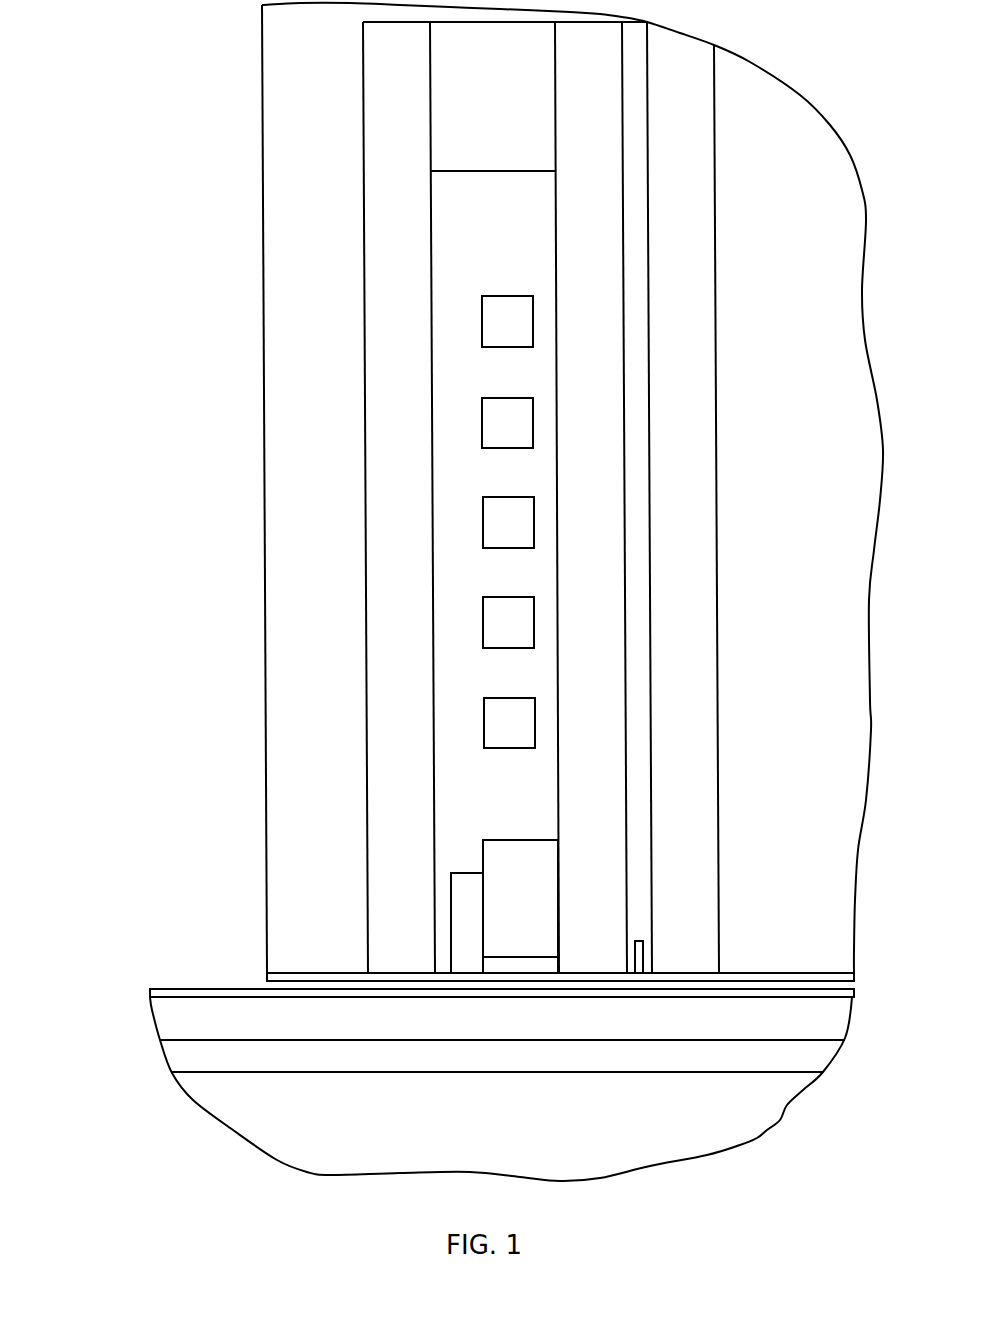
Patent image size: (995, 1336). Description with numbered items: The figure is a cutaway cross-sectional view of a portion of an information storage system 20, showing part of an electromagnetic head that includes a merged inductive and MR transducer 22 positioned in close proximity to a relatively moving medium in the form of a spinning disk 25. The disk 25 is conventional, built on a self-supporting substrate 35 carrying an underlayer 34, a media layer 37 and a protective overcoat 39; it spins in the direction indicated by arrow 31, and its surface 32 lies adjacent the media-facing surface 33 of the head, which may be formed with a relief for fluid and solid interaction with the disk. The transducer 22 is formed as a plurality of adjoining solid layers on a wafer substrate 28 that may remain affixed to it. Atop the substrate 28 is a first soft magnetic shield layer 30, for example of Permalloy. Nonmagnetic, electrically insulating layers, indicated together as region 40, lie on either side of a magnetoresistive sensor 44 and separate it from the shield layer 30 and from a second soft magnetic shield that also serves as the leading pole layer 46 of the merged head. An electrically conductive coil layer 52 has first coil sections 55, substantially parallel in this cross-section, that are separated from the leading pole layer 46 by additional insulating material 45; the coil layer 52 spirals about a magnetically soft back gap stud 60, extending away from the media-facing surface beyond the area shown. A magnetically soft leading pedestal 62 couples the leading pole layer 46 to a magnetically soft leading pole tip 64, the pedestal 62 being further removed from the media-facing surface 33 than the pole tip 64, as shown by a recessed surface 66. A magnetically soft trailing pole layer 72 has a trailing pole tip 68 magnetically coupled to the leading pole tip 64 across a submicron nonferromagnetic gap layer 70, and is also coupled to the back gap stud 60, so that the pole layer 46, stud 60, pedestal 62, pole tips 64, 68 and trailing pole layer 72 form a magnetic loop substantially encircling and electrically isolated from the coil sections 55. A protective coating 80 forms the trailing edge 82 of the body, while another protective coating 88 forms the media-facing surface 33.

The information storage system 20 is at (130, 38).
The merged inductive and MR transducer 22 is at (197, 591).
The spinning disk 25 is at (133, 1076).
The wafer substrate 28 is at (781, 506).
The first soft magnetic shield layer 30 is at (665, 618).
The arrow 31 is at (268, 1124).
The disk surface 32 is at (184, 990).
The media-facing surface 33 is at (830, 984).
The underlayer 34 is at (652, 1062).
The self-supporting substrate 35 is at (485, 1153).
The media layer 37 is at (240, 1041).
The protective overcoat 39 is at (750, 998).
The region of nonmagnetic, electrically insulating material 40 is at (640, 288).
The MR sensor 44 is at (644, 957).
The nonmagnetic, electrically insulating material 45 is at (481, 585).
The leading pole layer 46 is at (574, 620).
The coil layer 52 is at (504, 270).
The first coil sections 55 is at (533, 322).
The back gap stud 60 is at (479, 116).
The leading pedestal 62 is at (534, 840).
The leading pole tip 64 is at (467, 873).
The recessed surface 66 is at (527, 960).
The trailing pole tip 68 is at (368, 965).
The gap layer 70 is at (451, 957).
The trailing pole layer 72 is at (381, 569).
The protective coating 80 is at (296, 569).
The trailing edge 82 is at (263, 457).
The protective coating 88 is at (788, 973).